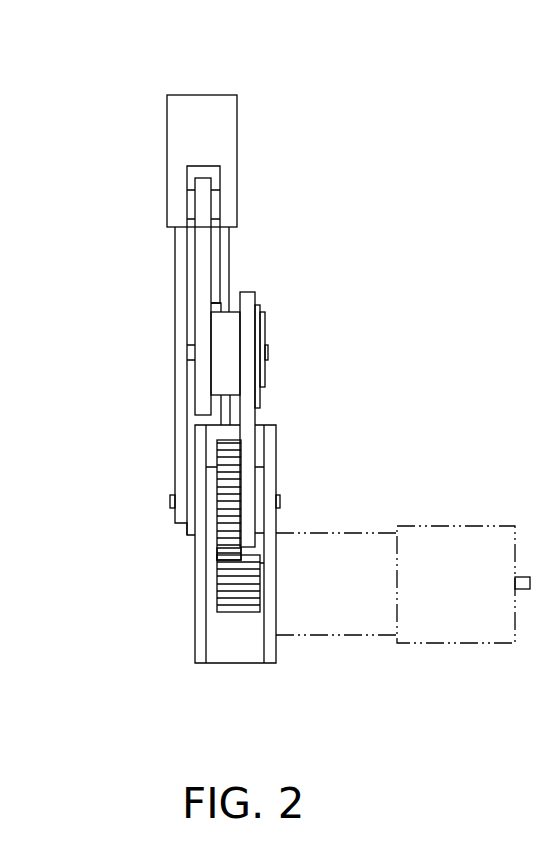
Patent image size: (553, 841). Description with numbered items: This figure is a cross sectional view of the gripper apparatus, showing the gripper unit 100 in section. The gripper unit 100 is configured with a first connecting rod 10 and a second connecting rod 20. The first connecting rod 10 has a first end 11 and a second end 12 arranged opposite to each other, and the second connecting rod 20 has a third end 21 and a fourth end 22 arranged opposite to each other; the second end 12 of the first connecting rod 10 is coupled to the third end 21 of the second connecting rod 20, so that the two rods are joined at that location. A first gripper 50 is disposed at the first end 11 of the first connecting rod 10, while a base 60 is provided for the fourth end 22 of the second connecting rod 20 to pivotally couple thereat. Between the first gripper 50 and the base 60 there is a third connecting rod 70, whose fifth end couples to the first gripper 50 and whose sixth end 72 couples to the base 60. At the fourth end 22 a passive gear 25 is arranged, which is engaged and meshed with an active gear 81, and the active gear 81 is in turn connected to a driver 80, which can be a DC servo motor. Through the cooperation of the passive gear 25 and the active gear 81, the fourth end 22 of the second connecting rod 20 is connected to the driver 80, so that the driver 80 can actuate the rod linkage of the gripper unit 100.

The gripper unit 100 is at (278, 73).
The first gripper 50 is at (185, 145).
The first connecting rod 10 is at (118, 190).
The first end 11 is at (203, 205).
The second end 12 is at (203, 372).
The third connecting rod 70 is at (178, 443).
The sixth end 72 is at (177, 515).
The second connecting rod 20 is at (342, 315).
The third end 21 is at (250, 342).
The fourth end 22 is at (250, 493).
The passive gear 25 is at (225, 548).
The base 60 is at (202, 626).
The active gear 81 is at (235, 605).
The driver 80 is at (455, 538).